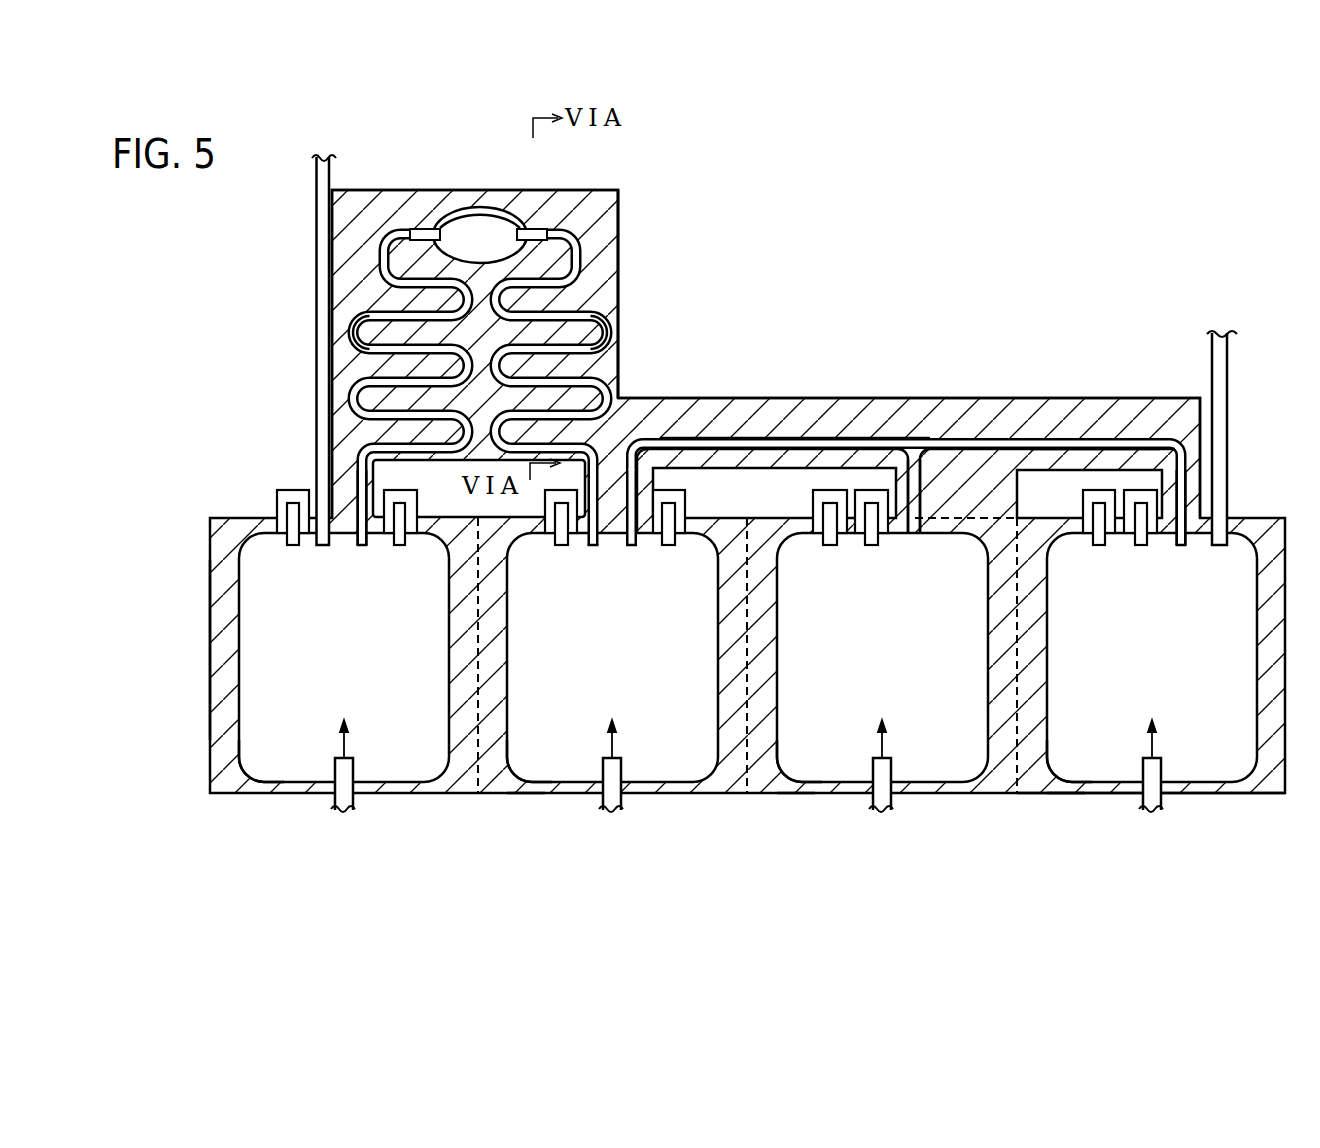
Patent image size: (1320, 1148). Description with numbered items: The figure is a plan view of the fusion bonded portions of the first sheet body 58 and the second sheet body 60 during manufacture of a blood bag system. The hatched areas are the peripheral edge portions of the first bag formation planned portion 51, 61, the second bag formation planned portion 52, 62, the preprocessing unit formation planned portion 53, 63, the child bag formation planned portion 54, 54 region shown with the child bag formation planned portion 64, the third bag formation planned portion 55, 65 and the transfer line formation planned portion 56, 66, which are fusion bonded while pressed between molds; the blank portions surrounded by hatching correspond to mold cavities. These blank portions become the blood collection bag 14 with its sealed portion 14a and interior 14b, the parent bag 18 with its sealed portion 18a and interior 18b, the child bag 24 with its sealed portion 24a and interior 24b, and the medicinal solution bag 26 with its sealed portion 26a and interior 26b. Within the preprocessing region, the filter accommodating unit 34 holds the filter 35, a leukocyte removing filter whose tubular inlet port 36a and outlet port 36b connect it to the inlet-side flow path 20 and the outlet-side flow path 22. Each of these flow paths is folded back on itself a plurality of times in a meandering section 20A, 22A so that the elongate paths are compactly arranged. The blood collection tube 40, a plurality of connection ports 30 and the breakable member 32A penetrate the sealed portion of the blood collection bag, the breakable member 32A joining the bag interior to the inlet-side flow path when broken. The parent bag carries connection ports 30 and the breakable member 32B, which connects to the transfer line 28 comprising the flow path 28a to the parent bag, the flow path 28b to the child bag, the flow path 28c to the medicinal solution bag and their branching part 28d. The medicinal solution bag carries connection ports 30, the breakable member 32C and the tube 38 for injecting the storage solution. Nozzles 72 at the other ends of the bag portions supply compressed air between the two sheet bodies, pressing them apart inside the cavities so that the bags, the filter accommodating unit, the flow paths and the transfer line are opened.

The blood collection bag 14 is at (297, 765).
The sealed portion 14a is at (212, 705).
The interior 14b is at (252, 773).
The parent bag 18 is at (585, 765).
The sealed portion 18a is at (520, 793).
The interior 18b is at (520, 773).
The inlet-side flow path 20 is at (378, 261).
The meandering section 20A is at (350, 330).
The outlet-side flow path 22 is at (578, 258).
The meandering section 22A is at (610, 333).
The child bag 24 is at (855, 765).
The sealed portion 24a is at (790, 793).
The interior 24b is at (790, 773).
The medicinal solution bag 26 is at (1125, 765).
The sealed portion 26a is at (1060, 793).
The interior 26b is at (1060, 773).
The transfer line 28 is at (1005, 440).
The flow path 28a is at (790, 446).
The flow path 28b is at (915, 497).
The flow path 28c is at (1057, 447).
The branching part 28d is at (917, 440).
The connection ports 30 is at (870, 492).
The breakable member 32A is at (362, 545).
The breakable member 32B is at (632, 545).
The breakable member 32C is at (1182, 545).
The filter accommodating unit 34 is at (464, 218).
The filter 35 is at (487, 215).
The inlet port 36a is at (420, 228).
The outlet port 36b is at (540, 228).
The tube 38 is at (1228, 473).
The blood collection tube 40 is at (318, 208).
The first bag formation planned portion 51 is at (711, 515).
The second bag formation planned portion 52 is at (612, 707).
The preprocessing unit formation planned portion 53 is at (667, 294).
The child bag formation planned portion 54 is at (910, 707).
The third bag formation planned portion 55 is at (1151, 844).
The transfer line formation planned portion 56 is at (909, 421).
The first sheet body 58 is at (531, 354).
The second sheet body 60 is at (620, 213).
The first bag formation planned portion 61 is at (237, 795).
The second bag formation planned portion 62 is at (545, 793).
The preprocessing unit formation planned portion 63 is at (605, 295).
The child bag formation planned portion 64 is at (815, 793).
The third bag formation planned portion 65 is at (1085, 793).
The transfer line formation planned portion 66 is at (965, 396).
The nozzles 72 is at (353, 770).